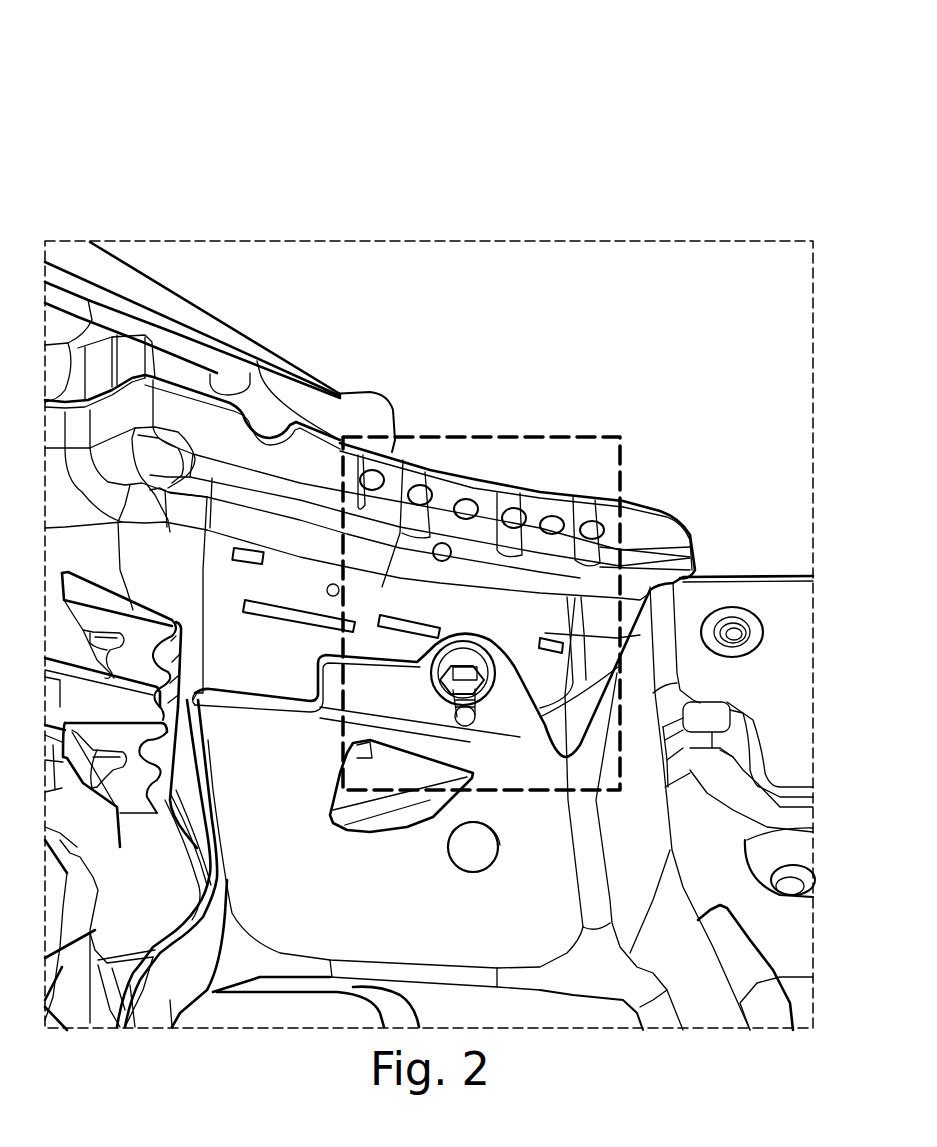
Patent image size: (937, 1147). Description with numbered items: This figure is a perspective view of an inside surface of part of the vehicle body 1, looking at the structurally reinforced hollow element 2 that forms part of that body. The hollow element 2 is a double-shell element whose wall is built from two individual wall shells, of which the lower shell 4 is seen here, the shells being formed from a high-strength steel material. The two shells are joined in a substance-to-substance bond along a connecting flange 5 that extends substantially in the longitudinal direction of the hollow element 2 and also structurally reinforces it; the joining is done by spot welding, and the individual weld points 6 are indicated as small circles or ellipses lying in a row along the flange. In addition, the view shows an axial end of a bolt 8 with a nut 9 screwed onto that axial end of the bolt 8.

The vehicle body 1 is at (104, 112).
The structurally reinforced hollow element 2 is at (622, 482).
The lower shell 4 is at (458, 602).
The connecting flange 5 is at (673, 537).
The weld point 6 is at (587, 527).
The bolt 8 is at (483, 705).
The nut 9 is at (500, 707).